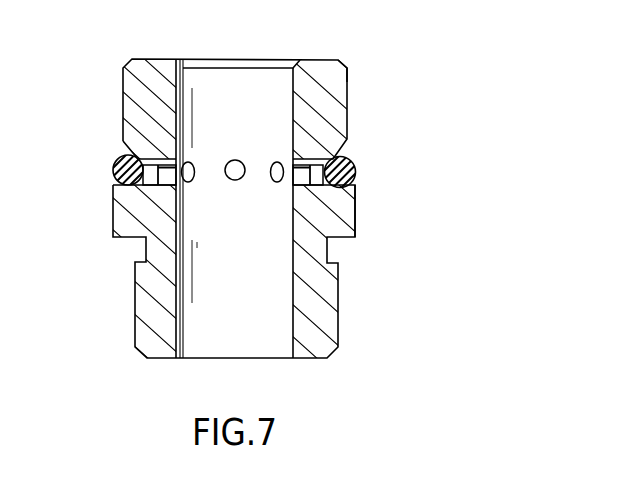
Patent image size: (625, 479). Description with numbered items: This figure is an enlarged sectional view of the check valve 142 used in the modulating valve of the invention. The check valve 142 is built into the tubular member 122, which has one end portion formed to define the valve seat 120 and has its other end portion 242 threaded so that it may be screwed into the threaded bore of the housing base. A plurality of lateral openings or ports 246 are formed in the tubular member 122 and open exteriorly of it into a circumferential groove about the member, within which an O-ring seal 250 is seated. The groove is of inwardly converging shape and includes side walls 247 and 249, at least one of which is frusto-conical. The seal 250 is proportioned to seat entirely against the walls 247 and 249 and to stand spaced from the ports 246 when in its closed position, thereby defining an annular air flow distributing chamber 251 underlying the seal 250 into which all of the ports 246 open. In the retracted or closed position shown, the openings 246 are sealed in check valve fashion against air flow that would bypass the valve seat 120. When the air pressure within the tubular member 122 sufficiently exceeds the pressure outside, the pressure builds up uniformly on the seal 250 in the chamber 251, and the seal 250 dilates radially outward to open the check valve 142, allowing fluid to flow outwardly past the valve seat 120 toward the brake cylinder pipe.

The valve seat 120 is at (322, 60).
The tubular member 122 is at (330, 115).
The other end portion 242 is at (347, 82).
The side wall 247 is at (342, 153).
The O-ring seal 250 is at (113, 171).
The annular air flow distributing chamber 251 is at (322, 186).
The side wall 249 is at (351, 183).
The lateral openings or ports 246 is at (235, 181).
The check valve 142 is at (388, 171).